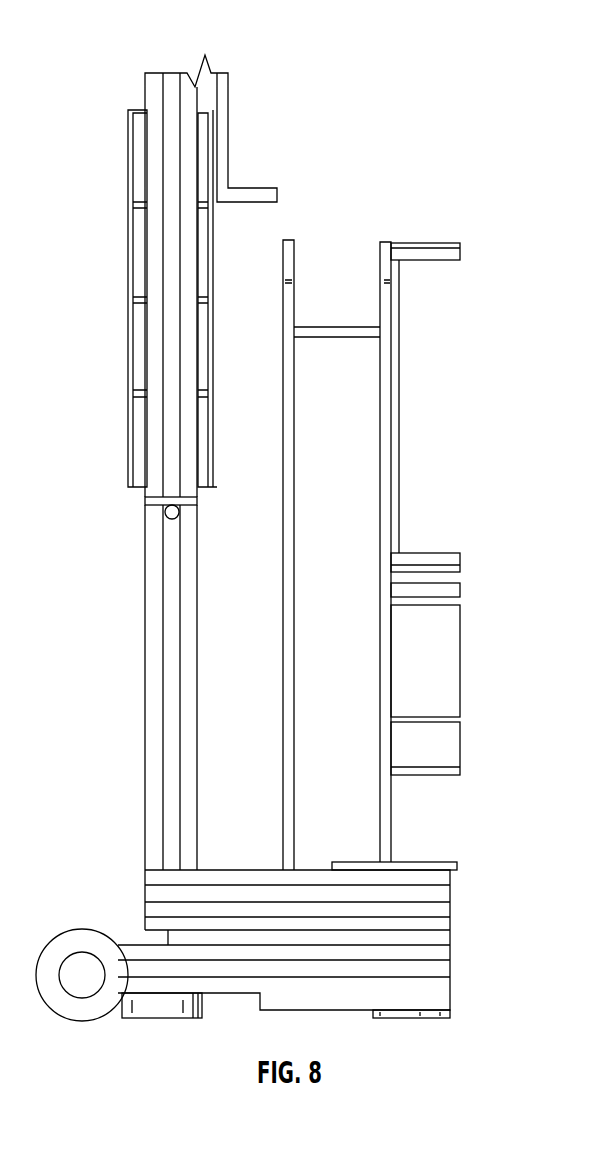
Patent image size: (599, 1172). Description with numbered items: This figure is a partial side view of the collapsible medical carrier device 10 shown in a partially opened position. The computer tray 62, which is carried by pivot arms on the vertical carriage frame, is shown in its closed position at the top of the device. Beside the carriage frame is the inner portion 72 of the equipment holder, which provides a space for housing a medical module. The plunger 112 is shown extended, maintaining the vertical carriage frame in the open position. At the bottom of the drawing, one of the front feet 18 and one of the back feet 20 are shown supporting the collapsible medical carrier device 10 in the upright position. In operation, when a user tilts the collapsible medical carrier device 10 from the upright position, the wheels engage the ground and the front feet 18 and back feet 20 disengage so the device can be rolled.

The collapsible medical carrier device 10 is at (86, 256).
The computer tray 62 is at (222, 100).
The inner portion of the equipment holder 72 is at (325, 498).
The plunger 112 is at (163, 512).
The back feet 20 is at (203, 1006).
The front feet 18 is at (398, 1016).